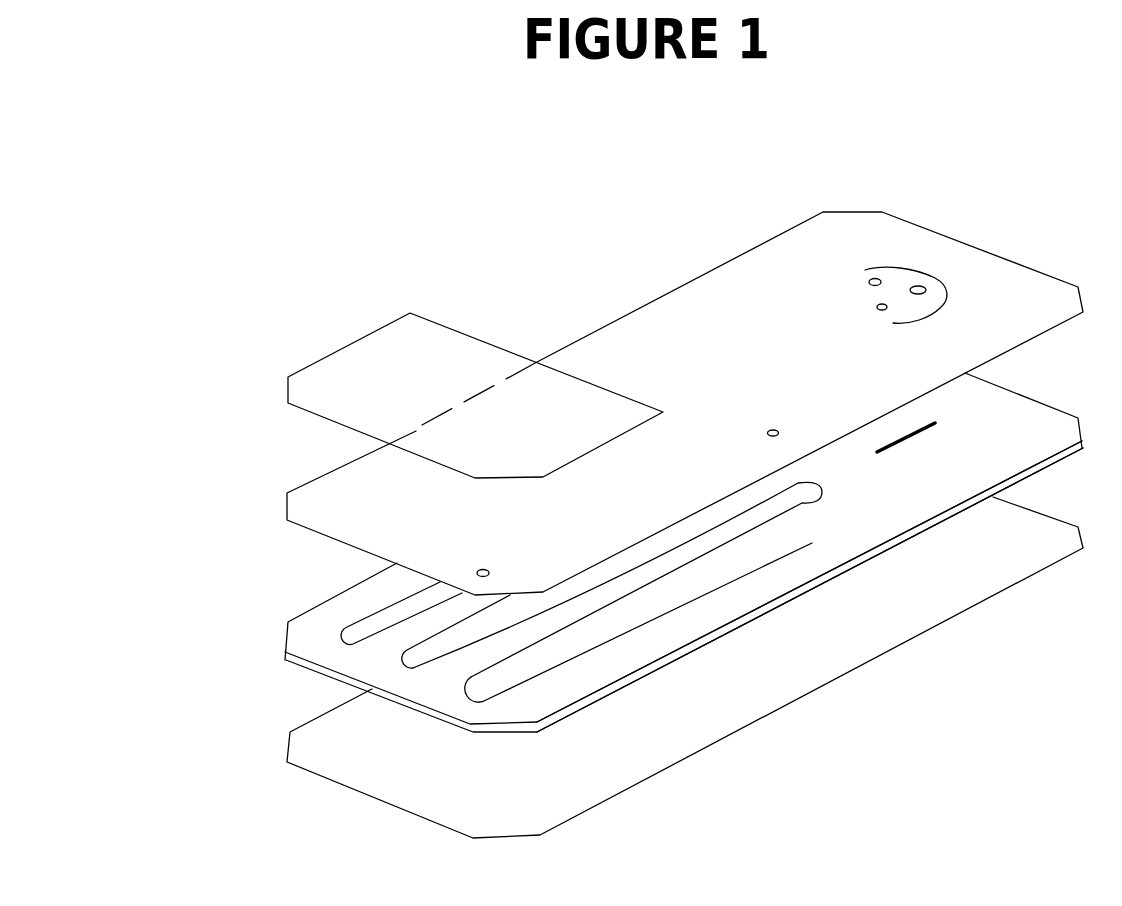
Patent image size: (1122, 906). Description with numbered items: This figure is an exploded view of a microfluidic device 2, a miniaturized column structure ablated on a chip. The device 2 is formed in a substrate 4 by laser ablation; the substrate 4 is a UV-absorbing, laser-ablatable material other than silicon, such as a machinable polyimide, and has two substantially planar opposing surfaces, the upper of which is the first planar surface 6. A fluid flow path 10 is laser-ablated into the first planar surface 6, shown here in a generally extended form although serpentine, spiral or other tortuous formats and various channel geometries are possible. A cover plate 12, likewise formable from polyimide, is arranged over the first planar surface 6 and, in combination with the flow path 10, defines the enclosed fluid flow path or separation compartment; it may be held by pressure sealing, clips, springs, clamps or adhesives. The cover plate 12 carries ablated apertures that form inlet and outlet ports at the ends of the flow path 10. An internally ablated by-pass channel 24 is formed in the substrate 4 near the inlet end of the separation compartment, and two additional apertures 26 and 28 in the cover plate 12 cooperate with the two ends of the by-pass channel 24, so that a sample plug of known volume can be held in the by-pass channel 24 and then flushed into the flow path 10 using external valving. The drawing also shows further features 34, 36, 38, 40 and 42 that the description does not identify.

The microfluidic device 2 is at (297, 580).
The substrate 4 is at (662, 626).
The first planar surface 6 is at (815, 537).
The fluid flow path 10 is at (803, 506).
The cover plate 12 is at (685, 388).
The by-pass channel 24 is at (917, 443).
The aperture 26 is at (883, 312).
The aperture 28 is at (947, 290).
The slot 34 is at (484, 698).
The hole 36 is at (477, 571).
The label plate 38 is at (388, 370).
The bottom layer 40 is at (870, 618).
The hidden edge 42 is at (543, 427).